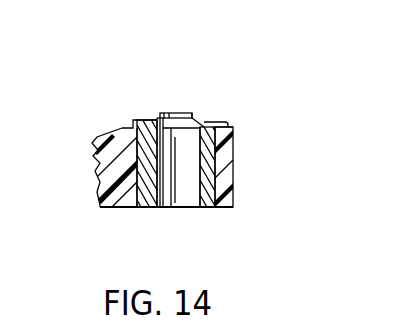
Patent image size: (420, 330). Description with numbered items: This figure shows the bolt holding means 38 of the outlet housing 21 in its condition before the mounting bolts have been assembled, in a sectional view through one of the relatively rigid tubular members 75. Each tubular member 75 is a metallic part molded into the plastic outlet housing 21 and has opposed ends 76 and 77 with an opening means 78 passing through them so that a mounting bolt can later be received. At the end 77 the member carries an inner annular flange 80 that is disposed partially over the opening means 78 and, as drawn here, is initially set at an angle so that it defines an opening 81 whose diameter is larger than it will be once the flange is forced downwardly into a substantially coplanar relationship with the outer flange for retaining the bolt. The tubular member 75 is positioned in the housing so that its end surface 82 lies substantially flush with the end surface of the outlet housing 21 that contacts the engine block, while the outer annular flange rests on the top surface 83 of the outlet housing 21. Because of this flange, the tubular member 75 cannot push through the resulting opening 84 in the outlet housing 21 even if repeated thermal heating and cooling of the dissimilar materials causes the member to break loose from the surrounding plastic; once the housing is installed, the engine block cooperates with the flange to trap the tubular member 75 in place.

The outlet housing 21 is at (98, 185).
The bolt holding means 38 is at (240, 112).
The tubular member 75 is at (218, 172).
The end 76 is at (213, 208).
The end 77 is at (197, 120).
The opening means 78 is at (168, 190).
The inner annular flange 80 is at (162, 118).
The opening 81 is at (188, 117).
The end surface 82 is at (147, 208).
The top surface 83 is at (122, 127).
The opening 84 is at (214, 153).